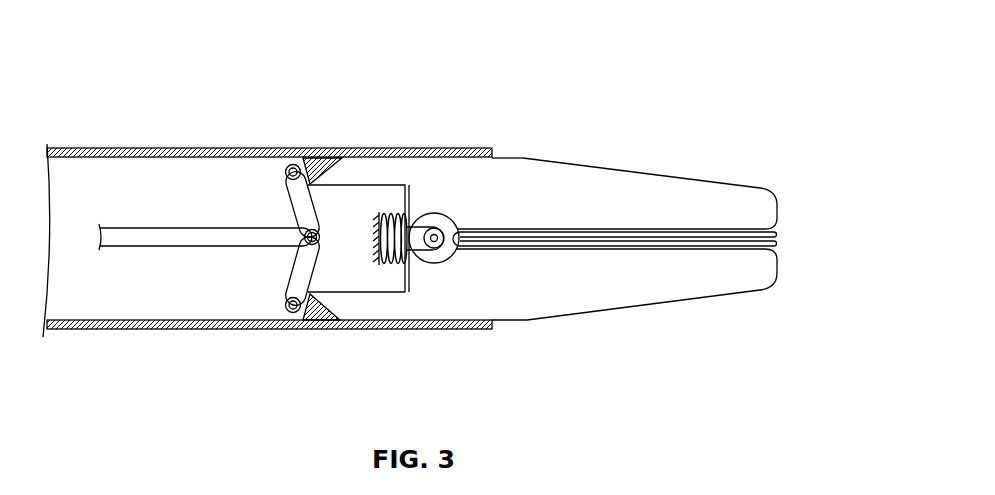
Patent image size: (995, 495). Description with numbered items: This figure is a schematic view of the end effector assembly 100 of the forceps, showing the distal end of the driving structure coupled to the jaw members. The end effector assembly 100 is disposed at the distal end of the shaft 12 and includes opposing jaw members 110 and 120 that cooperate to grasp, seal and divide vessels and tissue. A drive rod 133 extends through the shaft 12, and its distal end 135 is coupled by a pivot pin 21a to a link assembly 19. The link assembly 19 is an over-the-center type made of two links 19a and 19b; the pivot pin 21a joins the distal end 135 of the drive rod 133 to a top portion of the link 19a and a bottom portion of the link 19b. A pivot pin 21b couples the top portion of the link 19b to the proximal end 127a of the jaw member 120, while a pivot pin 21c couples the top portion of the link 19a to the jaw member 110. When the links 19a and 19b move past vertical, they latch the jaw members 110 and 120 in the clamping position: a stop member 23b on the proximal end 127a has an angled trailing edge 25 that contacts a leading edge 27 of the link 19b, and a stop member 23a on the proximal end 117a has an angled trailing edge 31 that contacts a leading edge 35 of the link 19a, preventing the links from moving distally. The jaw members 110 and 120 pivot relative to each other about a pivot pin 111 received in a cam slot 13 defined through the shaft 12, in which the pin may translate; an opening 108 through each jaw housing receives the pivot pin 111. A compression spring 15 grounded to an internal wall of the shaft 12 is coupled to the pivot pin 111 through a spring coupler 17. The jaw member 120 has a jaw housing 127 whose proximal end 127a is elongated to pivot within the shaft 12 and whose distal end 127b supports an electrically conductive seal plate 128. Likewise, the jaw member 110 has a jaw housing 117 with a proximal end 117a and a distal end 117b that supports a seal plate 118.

The end effector assembly 100 is at (670, 66).
The shaft 12 is at (112, 149).
The drive rod 133 is at (158, 227).
The link assembly 19 is at (259, 196).
The link 19a is at (297, 278).
The link 19b is at (297, 163).
The pivot pin 21a is at (303, 236).
The pivot pin 21b is at (287, 173).
The pivot pin 21c is at (286, 308).
The angled trailing edge 25 is at (298, 162).
The angled trailing edge 31 is at (292, 328).
The distal end 135 is at (288, 218).
The stop member 23a is at (352, 322).
The stop member 23b is at (337, 170).
The leading edge 27 is at (320, 219).
The leading edge 35 is at (322, 265).
The compression spring 15 is at (400, 275).
The cam slot 13 is at (410, 255).
The spring coupler 17 is at (412, 215).
The opening 108 is at (440, 258).
The pivot pin 111 is at (434, 236).
The jaw member 120 is at (640, 177).
The jaw housing 127 is at (593, 162).
The proximal end 127a is at (433, 170).
The distal end 127b is at (760, 190).
The seal plate 128 is at (773, 235).
The jaw member 110 is at (650, 300).
The jaw housing 117 is at (583, 315).
The proximal end 117a is at (458, 307).
The distal end 117b is at (760, 292).
The seal plate 118 is at (773, 243).